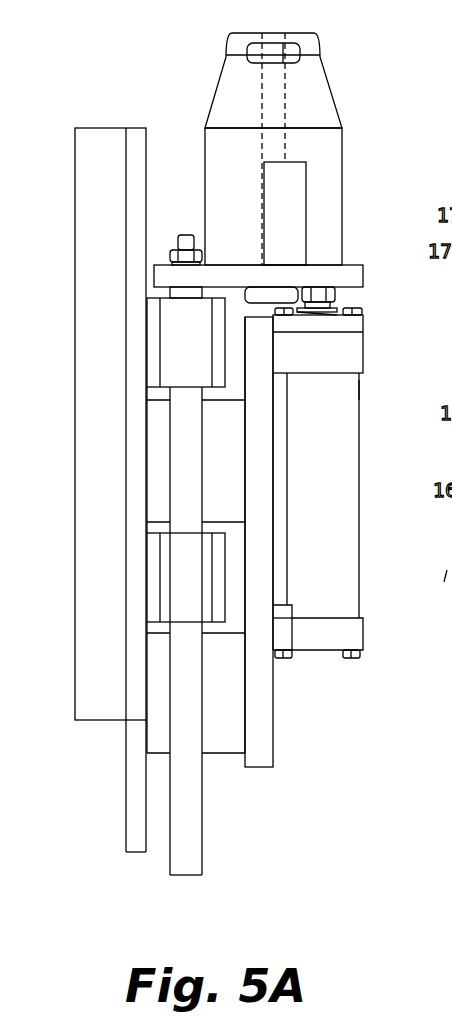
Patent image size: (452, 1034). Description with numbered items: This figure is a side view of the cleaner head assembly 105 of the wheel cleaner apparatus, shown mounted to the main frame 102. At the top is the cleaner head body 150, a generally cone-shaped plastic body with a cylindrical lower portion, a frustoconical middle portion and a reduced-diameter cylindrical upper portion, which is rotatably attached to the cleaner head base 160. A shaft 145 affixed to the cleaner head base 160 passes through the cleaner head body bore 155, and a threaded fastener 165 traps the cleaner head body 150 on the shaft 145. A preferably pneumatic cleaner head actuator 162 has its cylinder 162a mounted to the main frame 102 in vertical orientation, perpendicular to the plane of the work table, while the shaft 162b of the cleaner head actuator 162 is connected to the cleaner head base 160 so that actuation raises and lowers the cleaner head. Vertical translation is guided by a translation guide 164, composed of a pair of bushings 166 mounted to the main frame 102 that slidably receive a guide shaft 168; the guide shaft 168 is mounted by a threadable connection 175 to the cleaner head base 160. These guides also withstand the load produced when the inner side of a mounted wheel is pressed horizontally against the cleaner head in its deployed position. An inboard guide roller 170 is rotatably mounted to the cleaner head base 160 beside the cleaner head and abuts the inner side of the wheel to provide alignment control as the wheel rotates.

The main frame 102 is at (97, 735).
The cleaner head assembly 105 is at (363, 405).
The shaft 145 is at (285, 85).
The cleaner head body 150 is at (343, 188).
The cleaner head body bore 155 is at (272, 100).
The cleaner head base 160 is at (363, 275).
The cleaner head actuator 162 is at (362, 513).
The cylinder 162a is at (359, 547).
The shaft 162b is at (335, 300).
The translation guide 164 is at (143, 455).
The threaded fastener 165 is at (300, 45).
The bushing 166 is at (150, 326).
The guide shaft 168 is at (202, 830).
The inboard guide roller 170 is at (305, 225).
The threadable connection 175 is at (176, 252).